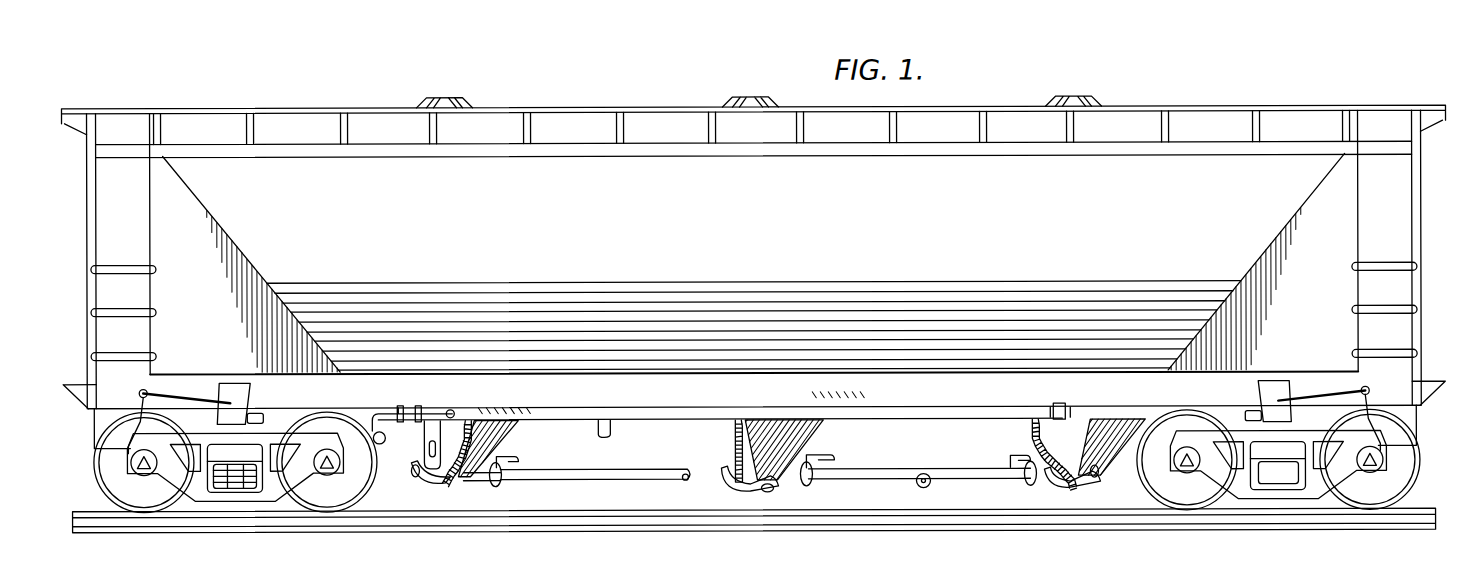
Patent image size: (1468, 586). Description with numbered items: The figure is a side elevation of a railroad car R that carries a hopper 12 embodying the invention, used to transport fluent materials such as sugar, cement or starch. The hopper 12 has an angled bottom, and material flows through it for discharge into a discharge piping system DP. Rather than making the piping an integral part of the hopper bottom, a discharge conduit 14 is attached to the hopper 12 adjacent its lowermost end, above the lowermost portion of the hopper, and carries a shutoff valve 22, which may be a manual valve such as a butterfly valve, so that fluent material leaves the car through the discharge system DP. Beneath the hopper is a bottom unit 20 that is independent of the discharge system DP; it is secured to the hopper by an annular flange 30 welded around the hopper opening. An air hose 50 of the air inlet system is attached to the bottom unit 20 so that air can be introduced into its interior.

The car R is at (1343, 85).
The hopper 12 is at (813, 442).
The discharge conduit 14 is at (479, 478).
The bottom unit 20 is at (430, 487).
The shutoff valve 22 is at (512, 452).
The annular flange 30 is at (415, 470).
The air hose 50 is at (478, 428).
The discharge piping system DP is at (572, 492).